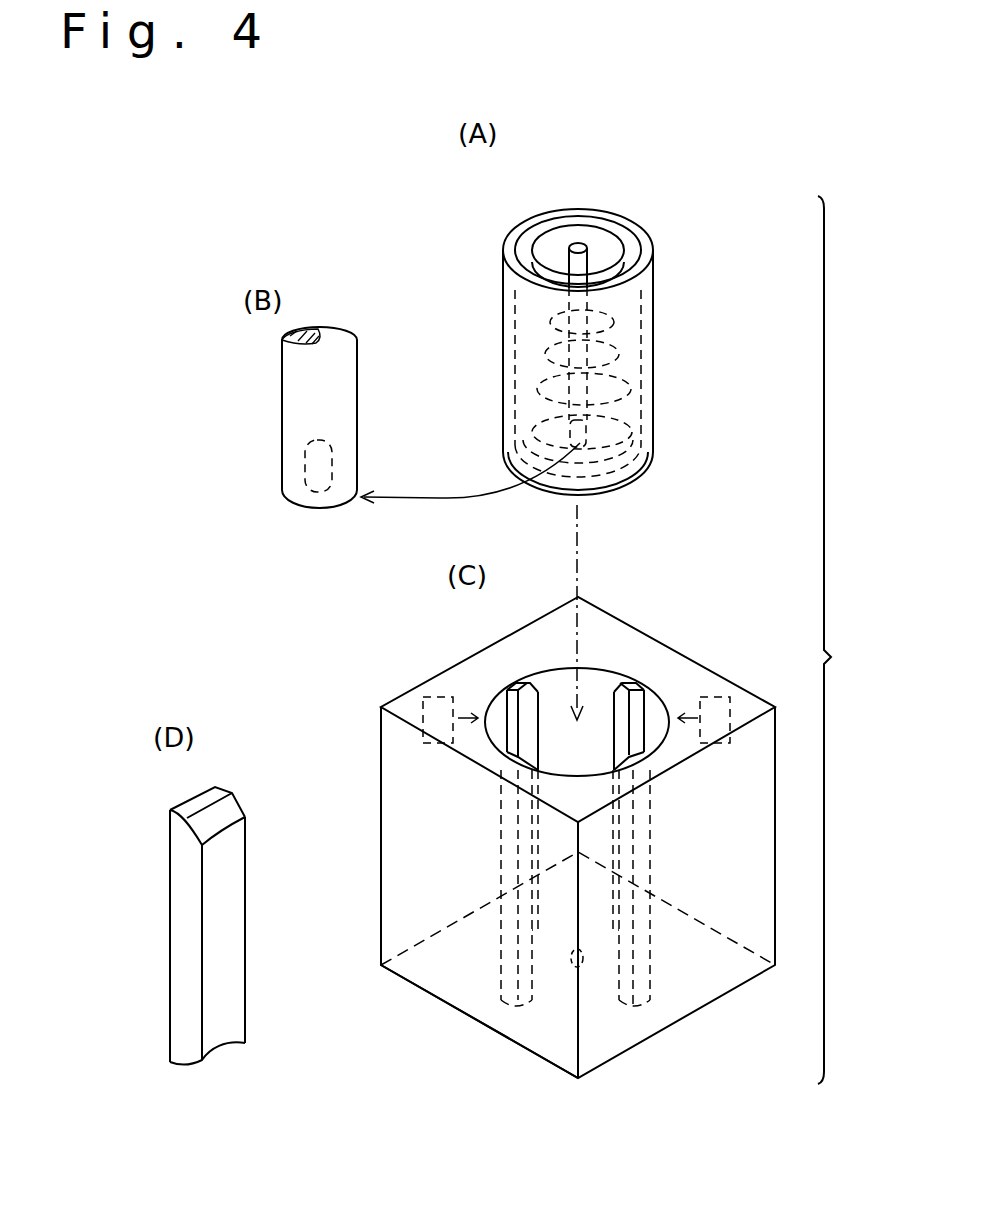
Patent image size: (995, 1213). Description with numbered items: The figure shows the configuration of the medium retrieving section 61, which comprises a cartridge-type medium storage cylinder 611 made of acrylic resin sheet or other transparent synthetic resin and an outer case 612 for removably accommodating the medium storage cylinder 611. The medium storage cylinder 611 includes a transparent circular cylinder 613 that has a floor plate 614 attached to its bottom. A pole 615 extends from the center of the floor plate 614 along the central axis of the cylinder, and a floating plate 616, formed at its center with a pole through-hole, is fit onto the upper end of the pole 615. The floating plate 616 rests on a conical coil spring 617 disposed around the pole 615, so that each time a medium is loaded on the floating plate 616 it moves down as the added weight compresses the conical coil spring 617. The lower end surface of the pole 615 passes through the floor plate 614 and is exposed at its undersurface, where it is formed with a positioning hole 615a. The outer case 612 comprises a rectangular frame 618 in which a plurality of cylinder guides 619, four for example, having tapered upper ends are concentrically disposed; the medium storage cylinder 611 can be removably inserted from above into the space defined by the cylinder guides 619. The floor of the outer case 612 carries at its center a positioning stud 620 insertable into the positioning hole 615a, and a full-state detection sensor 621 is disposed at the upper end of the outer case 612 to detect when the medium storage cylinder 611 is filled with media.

The medium retrieving section 61 is at (874, 676).
The medium storage cylinder 611 is at (493, 260).
The outer case 612 is at (378, 758).
The transparent circular cylinder 613 is at (655, 283).
The floor plate 614 is at (647, 470).
The pole 615 is at (640, 383).
The positioning hole 615a is at (305, 462).
The floating plate 616 is at (588, 235).
The conical coil spring 617 is at (620, 333).
The rectangular frame 618 is at (383, 938).
The cylinder guides 619 is at (515, 682).
The positioning stud 620 is at (573, 967).
The full-state detection sensor 621 is at (732, 702).